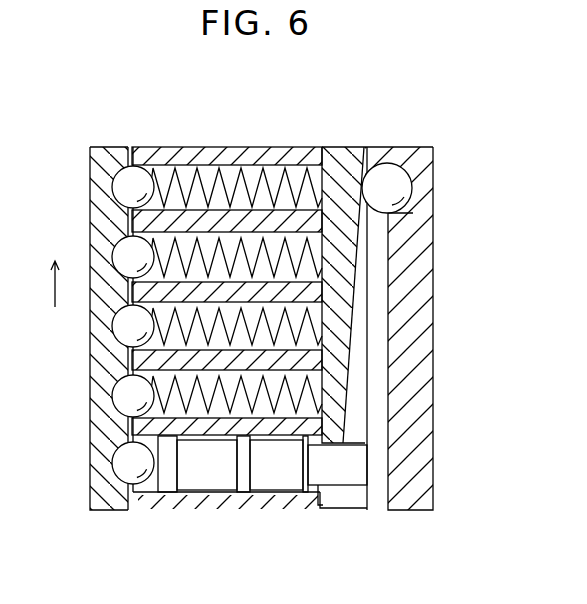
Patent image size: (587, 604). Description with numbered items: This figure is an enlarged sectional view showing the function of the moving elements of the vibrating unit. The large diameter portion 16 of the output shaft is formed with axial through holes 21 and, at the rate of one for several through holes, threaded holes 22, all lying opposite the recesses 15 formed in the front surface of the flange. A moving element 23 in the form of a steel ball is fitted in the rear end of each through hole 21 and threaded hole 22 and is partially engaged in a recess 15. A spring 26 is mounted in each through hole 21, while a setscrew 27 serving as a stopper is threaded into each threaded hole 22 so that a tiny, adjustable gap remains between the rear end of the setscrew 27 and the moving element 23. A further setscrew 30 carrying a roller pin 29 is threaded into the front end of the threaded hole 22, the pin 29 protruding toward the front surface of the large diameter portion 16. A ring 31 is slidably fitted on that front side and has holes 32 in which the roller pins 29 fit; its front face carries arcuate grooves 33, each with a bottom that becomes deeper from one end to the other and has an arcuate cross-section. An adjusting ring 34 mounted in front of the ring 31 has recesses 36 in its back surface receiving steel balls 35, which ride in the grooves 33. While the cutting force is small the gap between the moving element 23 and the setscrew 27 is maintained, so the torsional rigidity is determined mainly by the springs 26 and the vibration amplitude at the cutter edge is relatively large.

The recess 15 is at (133, 163).
The large diameter portion 16 is at (293, 152).
The through hole 21 is at (212, 165).
The threaded hole 22 is at (215, 482).
The moving element 23 is at (135, 193).
The spring 26 is at (135, 328).
The setscrew 27 is at (203, 473).
The roller pin 29 is at (343, 487).
The setscrew 30 is at (267, 473).
The ring 31 is at (348, 152).
The hole 32 is at (357, 487).
The arcuate groove 33 is at (345, 350).
The adjusting ring 34 is at (418, 281).
The steel ball 35 is at (393, 178).
The recess 36 is at (410, 197).